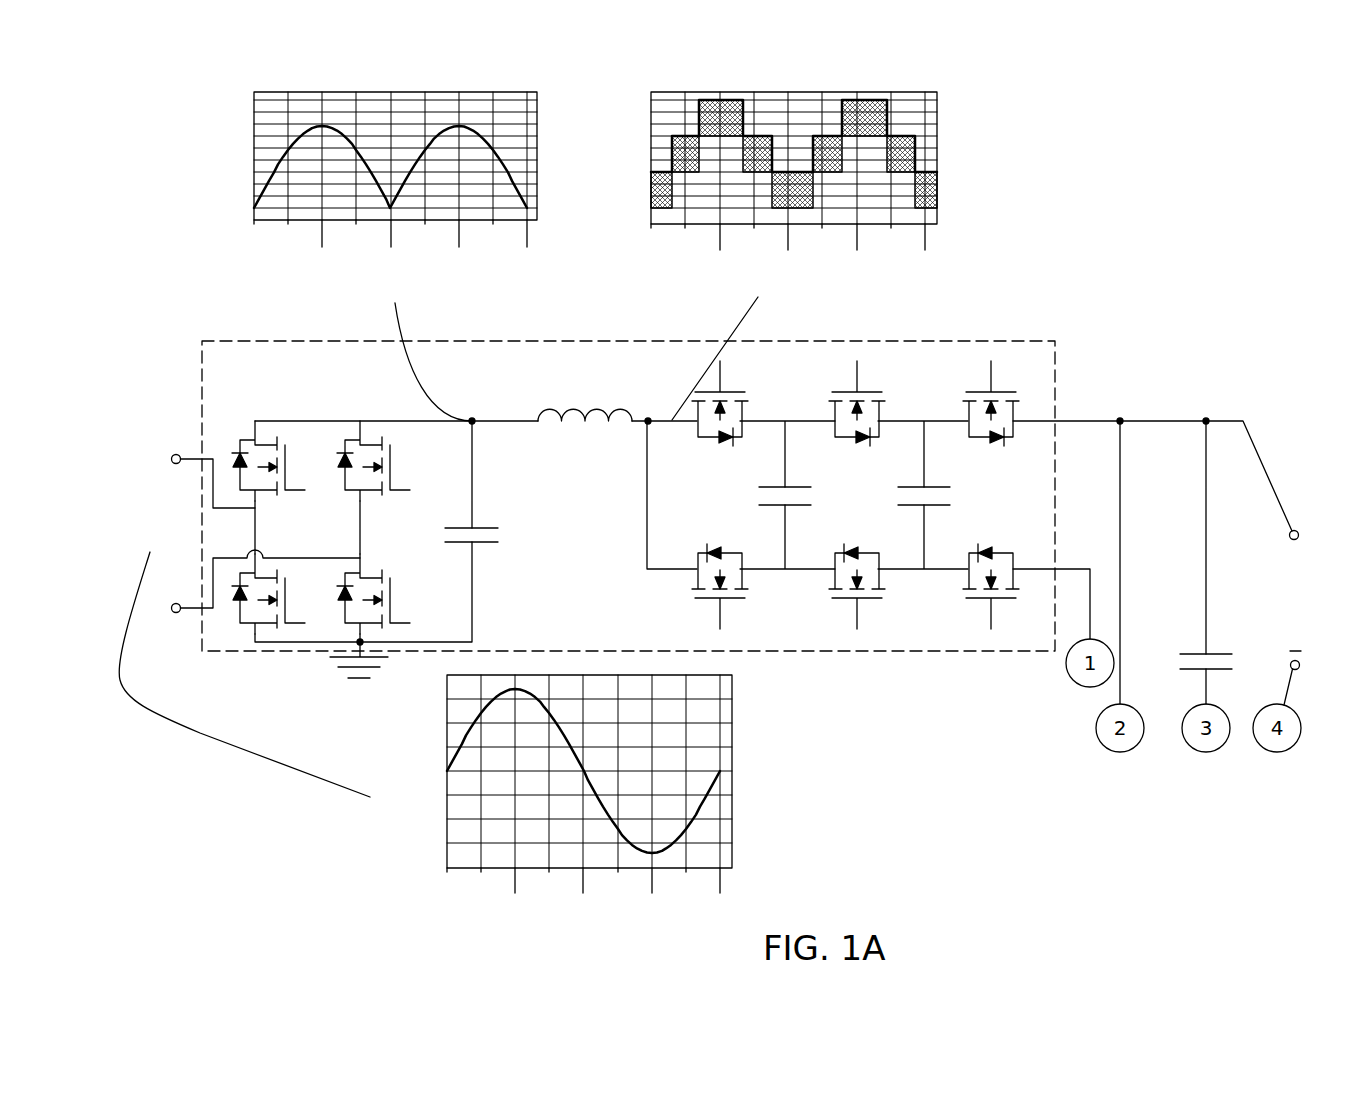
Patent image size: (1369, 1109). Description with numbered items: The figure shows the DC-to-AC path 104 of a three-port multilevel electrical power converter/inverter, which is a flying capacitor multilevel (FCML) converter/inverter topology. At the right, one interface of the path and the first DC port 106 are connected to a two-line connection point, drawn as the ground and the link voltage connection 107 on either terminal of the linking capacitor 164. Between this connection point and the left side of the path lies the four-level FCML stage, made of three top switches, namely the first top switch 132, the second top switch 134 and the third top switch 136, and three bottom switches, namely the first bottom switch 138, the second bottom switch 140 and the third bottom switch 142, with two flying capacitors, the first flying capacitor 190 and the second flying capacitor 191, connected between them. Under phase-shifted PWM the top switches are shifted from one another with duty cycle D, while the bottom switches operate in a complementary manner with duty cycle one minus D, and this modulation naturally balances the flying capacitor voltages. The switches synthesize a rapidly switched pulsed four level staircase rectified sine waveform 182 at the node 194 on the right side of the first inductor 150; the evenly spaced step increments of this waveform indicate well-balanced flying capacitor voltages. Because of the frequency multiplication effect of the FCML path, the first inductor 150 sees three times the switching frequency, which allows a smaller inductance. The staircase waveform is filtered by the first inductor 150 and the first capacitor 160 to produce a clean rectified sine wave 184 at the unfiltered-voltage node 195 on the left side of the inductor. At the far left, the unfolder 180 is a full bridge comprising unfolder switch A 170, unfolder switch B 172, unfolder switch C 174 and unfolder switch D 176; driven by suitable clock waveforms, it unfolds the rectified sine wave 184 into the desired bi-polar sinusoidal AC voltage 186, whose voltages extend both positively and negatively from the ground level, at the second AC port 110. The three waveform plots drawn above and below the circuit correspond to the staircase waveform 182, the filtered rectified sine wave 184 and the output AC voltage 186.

The DC-to-AC path 104 is at (1048, 328).
The DC port-1 106 is at (1306, 564).
The voltage connection V_Link 107 is at (1216, 389).
The AC port-2 110 is at (163, 593).
The switch TS11 132 is at (700, 442).
The switch TS12 134 is at (837, 440).
The switch TS13 136 is at (980, 440).
The switch BS11 138 is at (698, 553).
The switch BS12 140 is at (842, 553).
The switch BS13 142 is at (977, 553).
The inductor L1 150 is at (546, 425).
The output capacitor C1 160 is at (487, 547).
The linking capacitor C_Link 164 is at (1148, 662).
The unfolder switch A 170 is at (284, 458).
The unfolder switch B 172 is at (395, 450).
The unfolder switch C 174 is at (250, 633).
The unfolder switch D 176 is at (340, 618).
The unfolder 180 is at (359, 400).
The four level staircase rectified sine waveform 182 is at (938, 125).
The rectified sine wave 184 is at (498, 91).
The sinusoidal AC voltage 186 is at (733, 713).
The flying capacitor Cf11 190 is at (715, 477).
The flying capacitor Cf12 191 is at (852, 477).
The node V_n1 194 is at (642, 392).
The node V_uf 195 is at (492, 392).